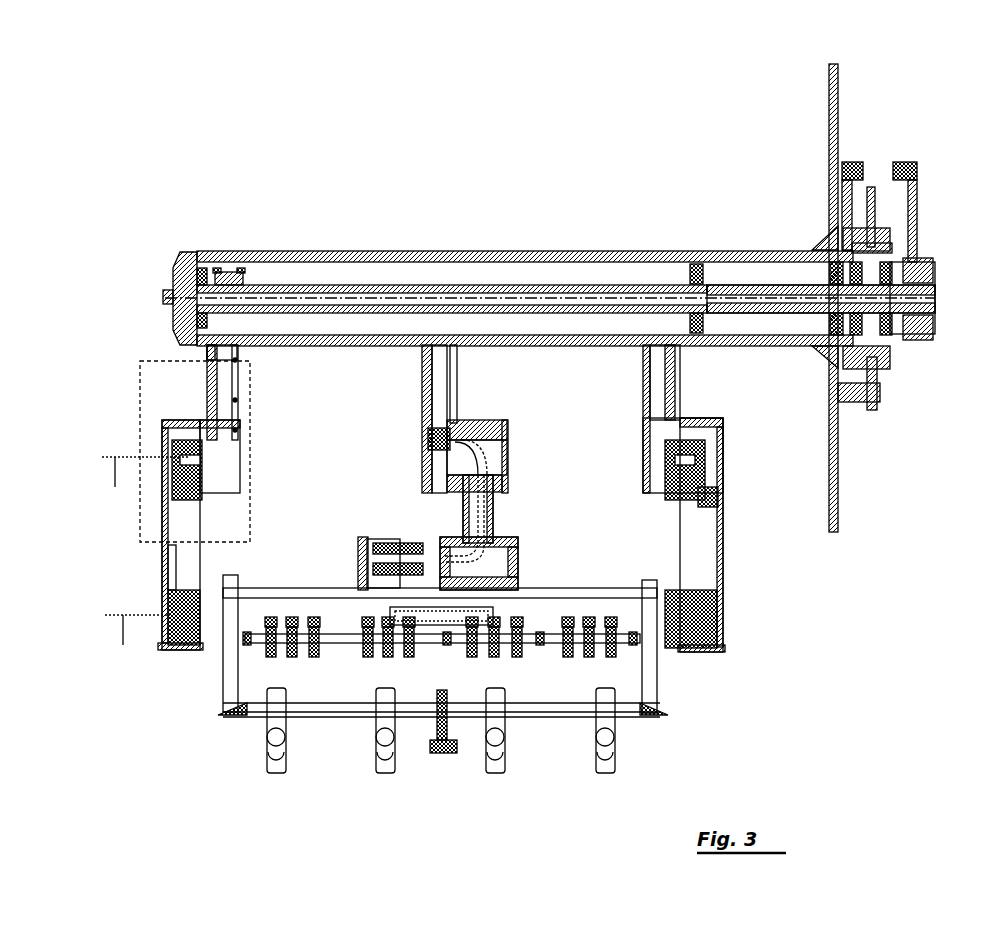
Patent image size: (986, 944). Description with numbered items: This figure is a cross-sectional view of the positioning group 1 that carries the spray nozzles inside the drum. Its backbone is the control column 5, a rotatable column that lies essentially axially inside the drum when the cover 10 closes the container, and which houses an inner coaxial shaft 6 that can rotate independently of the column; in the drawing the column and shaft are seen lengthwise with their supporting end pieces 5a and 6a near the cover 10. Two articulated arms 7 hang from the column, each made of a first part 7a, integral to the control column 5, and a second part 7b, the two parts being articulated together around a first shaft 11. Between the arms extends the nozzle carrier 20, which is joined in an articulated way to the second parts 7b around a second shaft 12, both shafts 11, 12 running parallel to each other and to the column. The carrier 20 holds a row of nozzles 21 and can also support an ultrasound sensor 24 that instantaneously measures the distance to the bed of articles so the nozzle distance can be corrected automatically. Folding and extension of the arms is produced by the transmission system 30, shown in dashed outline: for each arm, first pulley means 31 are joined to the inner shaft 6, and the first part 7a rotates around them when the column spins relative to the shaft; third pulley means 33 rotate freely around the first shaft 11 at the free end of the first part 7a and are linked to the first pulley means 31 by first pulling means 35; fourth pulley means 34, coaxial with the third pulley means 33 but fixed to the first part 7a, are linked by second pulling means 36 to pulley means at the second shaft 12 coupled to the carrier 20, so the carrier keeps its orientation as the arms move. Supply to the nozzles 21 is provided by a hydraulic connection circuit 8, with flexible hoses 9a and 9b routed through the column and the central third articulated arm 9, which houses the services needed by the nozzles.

The positioning group 1 is at (467, 252).
The control column 5 is at (293, 250).
The outer tube bearing support 5a is at (848, 165).
The inner shaft 6 is at (583, 285).
The shaft bearing support 6a is at (907, 165).
The articulated arm 7 is at (238, 422).
The first part of the articulated arm 7a is at (677, 372).
The second part of the articulated arm 7b is at (722, 557).
The hydraulic connection circuit 8 is at (493, 510).
The third articulated arm 9 is at (508, 437).
The supply hose 9a is at (457, 389).
The pump hose 9b is at (463, 510).
The cover 10 is at (828, 90).
The first shaft 11 is at (146, 484).
The second shaft 12 is at (137, 643).
The nozzle carrier 20 is at (573, 588).
The nozzles 21 is at (600, 777).
The sensor 24 is at (467, 706).
The transmission system 30 is at (180, 413).
The first pulley means 31 is at (224, 270).
The third pulley means 33 is at (238, 468).
The fourth pulley means 34 is at (163, 440).
The first pulling means 35 is at (227, 373).
The second pulling means 36 is at (172, 560).